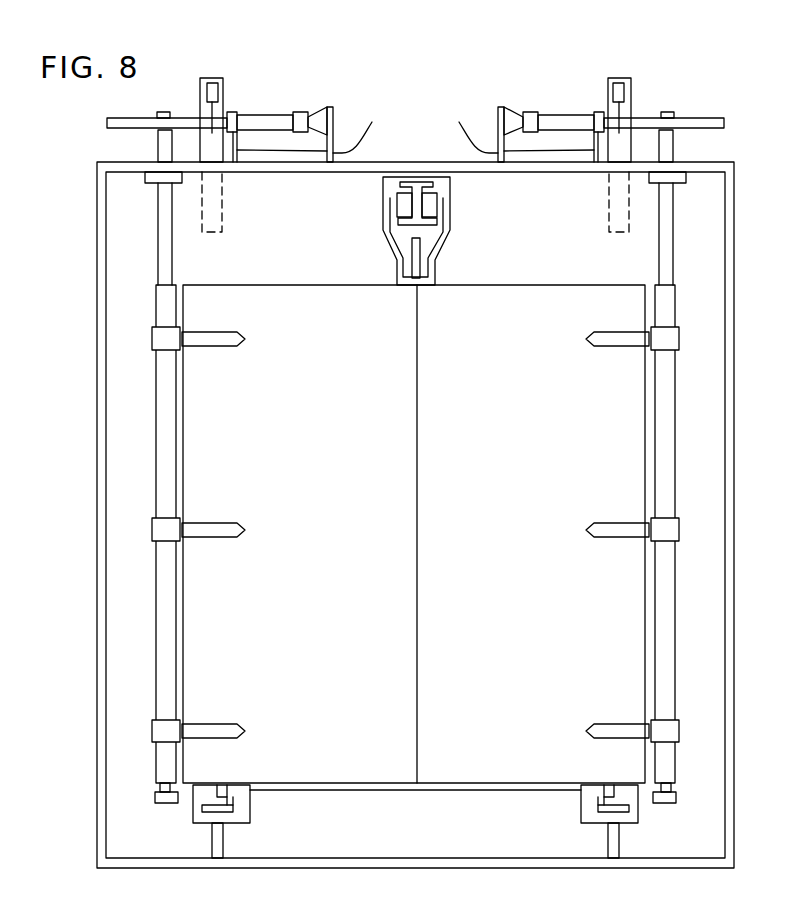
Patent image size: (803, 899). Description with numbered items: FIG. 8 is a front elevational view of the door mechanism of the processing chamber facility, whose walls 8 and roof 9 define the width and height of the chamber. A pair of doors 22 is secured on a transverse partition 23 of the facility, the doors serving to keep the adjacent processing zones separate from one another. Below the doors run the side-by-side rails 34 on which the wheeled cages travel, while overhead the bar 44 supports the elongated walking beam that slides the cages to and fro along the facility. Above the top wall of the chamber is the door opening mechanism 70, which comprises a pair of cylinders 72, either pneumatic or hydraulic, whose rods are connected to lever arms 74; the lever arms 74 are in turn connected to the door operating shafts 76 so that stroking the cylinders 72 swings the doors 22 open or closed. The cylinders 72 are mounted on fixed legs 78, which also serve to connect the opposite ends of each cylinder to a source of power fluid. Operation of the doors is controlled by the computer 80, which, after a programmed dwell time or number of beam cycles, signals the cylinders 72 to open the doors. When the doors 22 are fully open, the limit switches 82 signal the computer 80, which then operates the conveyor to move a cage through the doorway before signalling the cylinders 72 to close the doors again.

The walls 8 is at (97, 392).
The roof 9 is at (399, 162).
The doors 22 is at (352, 504).
The transverse partitions 23 is at (133, 458).
The rails 34 is at (235, 800).
The bar 44 is at (417, 177).
The door opening mechanism 70 is at (258, 97).
The cylinders 72 is at (277, 117).
The lever arms 74 is at (118, 130).
The door operating shafts 76 is at (157, 222).
The legs 78 is at (334, 147).
The computer 80 is at (224, 90).
The limit switches 82 is at (210, 83).